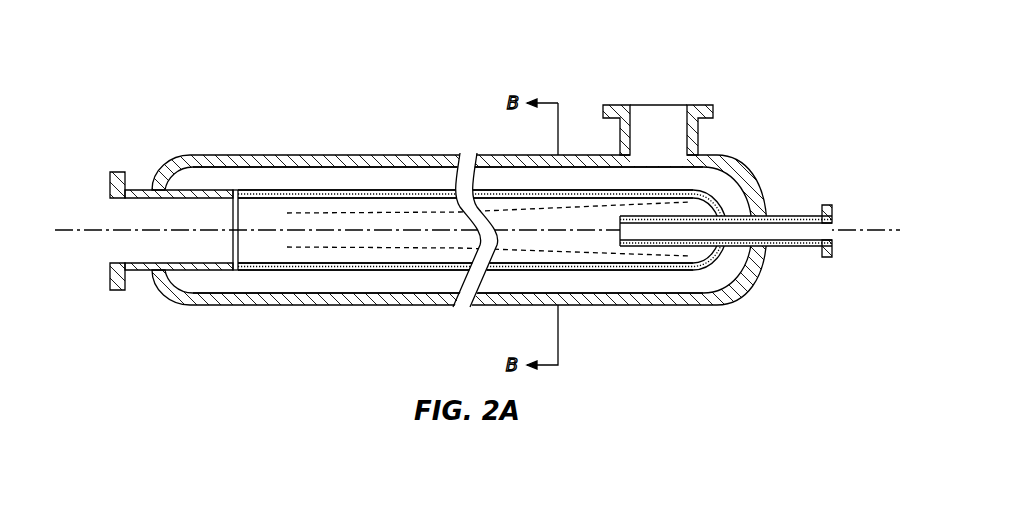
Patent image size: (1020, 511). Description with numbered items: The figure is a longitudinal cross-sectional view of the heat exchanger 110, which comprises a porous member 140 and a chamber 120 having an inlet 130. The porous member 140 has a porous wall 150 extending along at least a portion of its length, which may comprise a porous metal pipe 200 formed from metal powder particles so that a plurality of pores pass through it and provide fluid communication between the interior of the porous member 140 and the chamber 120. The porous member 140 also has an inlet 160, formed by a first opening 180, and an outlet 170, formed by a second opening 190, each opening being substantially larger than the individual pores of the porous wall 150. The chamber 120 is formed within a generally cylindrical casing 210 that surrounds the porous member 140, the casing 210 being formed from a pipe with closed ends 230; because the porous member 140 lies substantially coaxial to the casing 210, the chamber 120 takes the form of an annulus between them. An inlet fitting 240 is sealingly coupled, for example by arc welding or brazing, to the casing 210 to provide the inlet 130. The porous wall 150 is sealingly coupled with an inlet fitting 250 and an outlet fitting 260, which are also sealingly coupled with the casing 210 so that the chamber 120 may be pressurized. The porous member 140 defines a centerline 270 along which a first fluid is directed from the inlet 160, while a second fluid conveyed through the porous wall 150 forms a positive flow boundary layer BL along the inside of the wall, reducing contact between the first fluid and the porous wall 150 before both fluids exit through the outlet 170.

The heat exchanger 110 is at (142, 108).
The chamber 120 is at (388, 172).
The inlet 130 is at (658, 125).
The porous member 140 is at (247, 178).
The porous wall 150 is at (445, 270).
The inlet 160 is at (826, 232).
The outlet 170 is at (126, 247).
The first opening 180 is at (620, 228).
The second opening 190 is at (236, 242).
The porous metal pipe 200 is at (325, 187).
The casing 210 is at (355, 300).
The closed ends 230 is at (748, 157).
The inlet fitting 240 is at (613, 100).
The inlet fitting 250 is at (797, 272).
The outlet fitting 260 is at (100, 172).
The centerline 270 is at (320, 228).
The boundary layer BL is at (433, 213).